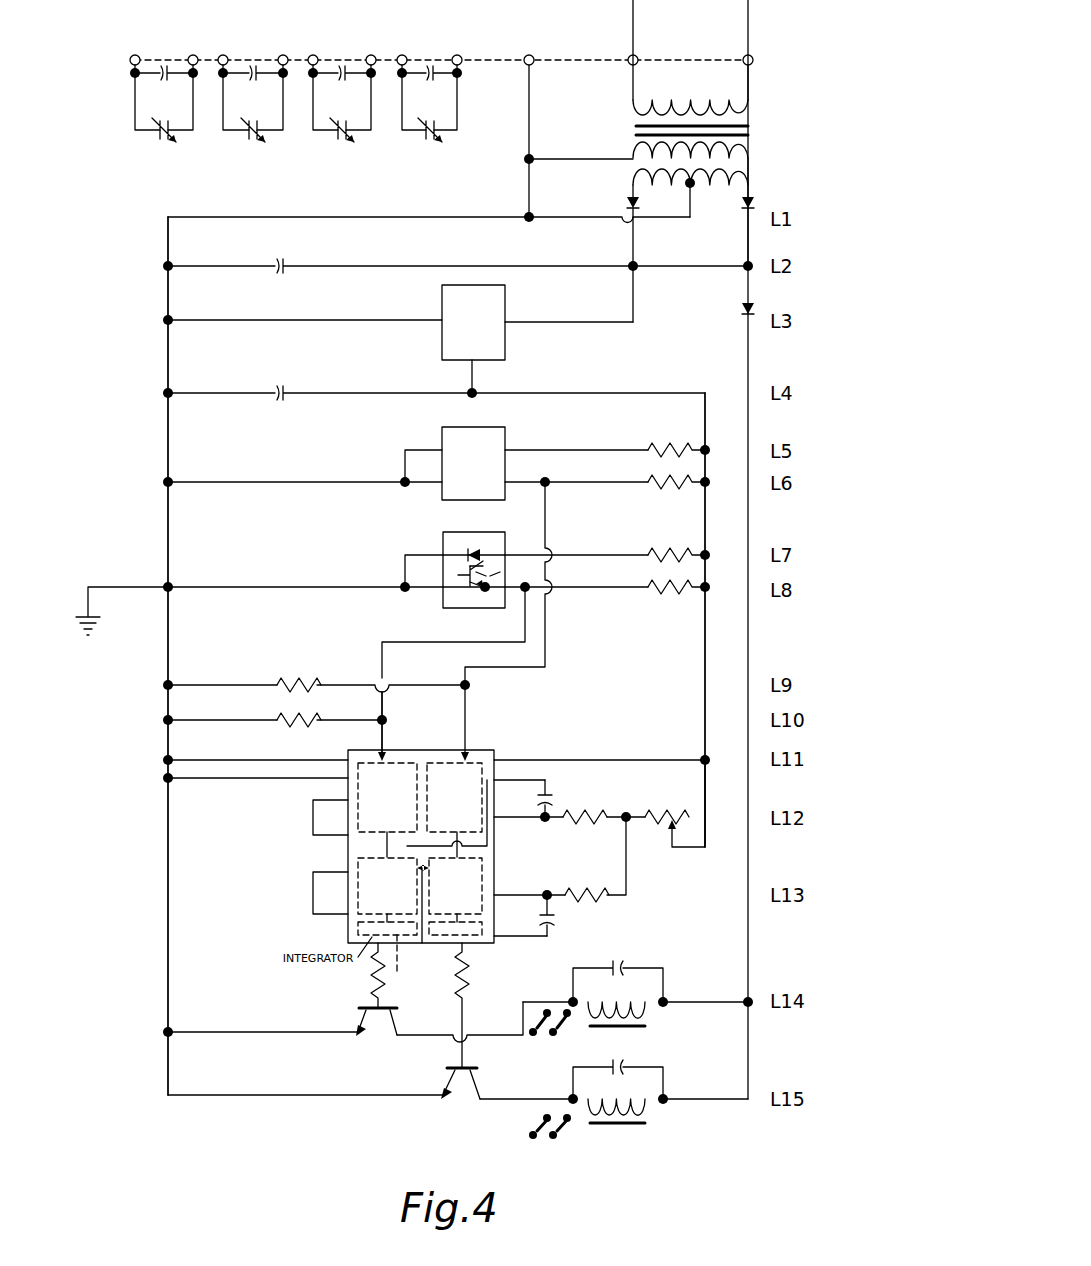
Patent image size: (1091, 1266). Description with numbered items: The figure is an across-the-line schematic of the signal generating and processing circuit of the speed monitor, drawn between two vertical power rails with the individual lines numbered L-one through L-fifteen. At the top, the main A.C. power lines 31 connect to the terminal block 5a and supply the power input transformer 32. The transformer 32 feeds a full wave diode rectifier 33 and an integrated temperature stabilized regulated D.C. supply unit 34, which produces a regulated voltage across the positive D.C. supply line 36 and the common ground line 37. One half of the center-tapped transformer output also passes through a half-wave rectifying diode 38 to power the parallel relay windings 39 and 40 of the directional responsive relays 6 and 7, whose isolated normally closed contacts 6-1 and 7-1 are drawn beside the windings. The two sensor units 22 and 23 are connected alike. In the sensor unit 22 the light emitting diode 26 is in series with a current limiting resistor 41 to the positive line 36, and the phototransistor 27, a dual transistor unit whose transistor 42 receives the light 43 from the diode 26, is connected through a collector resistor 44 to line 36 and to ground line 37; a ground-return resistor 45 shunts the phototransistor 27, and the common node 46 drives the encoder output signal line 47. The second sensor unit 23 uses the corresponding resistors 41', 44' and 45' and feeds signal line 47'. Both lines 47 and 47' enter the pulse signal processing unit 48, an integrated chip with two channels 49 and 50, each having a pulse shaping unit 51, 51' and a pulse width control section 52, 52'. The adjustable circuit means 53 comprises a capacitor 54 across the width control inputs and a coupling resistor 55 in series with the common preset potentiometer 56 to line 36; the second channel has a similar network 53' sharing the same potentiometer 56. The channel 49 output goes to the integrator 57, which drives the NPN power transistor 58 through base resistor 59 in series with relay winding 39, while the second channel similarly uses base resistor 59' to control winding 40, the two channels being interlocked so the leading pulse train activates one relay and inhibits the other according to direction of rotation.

The terminal block 5a is at (134, 60).
The normally closed contacts of relay 6 6-1 is at (251, 143).
The normally closed contacts of relay 7 7-1 is at (431, 143).
The A.C. power lines 31 is at (748, 22).
The power input transformer 32 is at (757, 129).
The full wave diode rectifier 33 is at (726, 251).
The regulated D.C. supply unit 34 is at (508, 300).
The half-wave rectifying diode 38 is at (746, 310).
The ground line 37 is at (166, 432).
The positive D.C. power supply line 36 is at (705, 413).
The sensor unit 23 is at (442, 435).
The current limiting resistor 41' is at (650, 442).
The collector resistor 44' is at (651, 495).
The current limiting resistor 41 is at (660, 545).
The collector resistor 44 is at (675, 610).
The sensor unit 22 is at (442, 544).
The light emitting diode 26 is at (478, 550).
The transistor 42 is at (462, 574).
The light 43 is at (484, 570).
The phototransistor 27 is at (476, 592).
The common node 46 is at (525, 600).
The encoder output signal line 47 is at (405, 724).
The encoder output signal line 47' is at (506, 621).
The ground-return resistor 45 is at (273, 731).
The ground-return resistor 45' is at (310, 663).
The signal processing channel 49 is at (382, 761).
The signal processing channel 50 is at (460, 761).
The pulse forming or shaping circuit unit 51 is at (344, 797).
The pulse shaping circuit unit 51' is at (483, 777).
The pulse signal processing unit 48 is at (348, 852).
The pulse width control section 52 is at (346, 915).
The pulse width control section 52' is at (498, 896).
The capacitor 54 is at (562, 797).
The adjustable circuit means 53 is at (617, 796).
The coupling resistor 55 is at (572, 826).
The preset potentiometer 56 is at (665, 807).
The digital-to-analog conversion unit 57 is at (670, 840).
The pulse width network 53' is at (615, 912).
The base resistor 59 is at (348, 975).
The base resistor 59' is at (448, 1005).
The power transistor 58 is at (358, 1024).
The directional responsive relay 6 is at (535, 1047).
The directional responsive relay 7 is at (540, 1150).
The relay winding 39 is at (658, 1020).
The relay winding 40 is at (661, 1118).